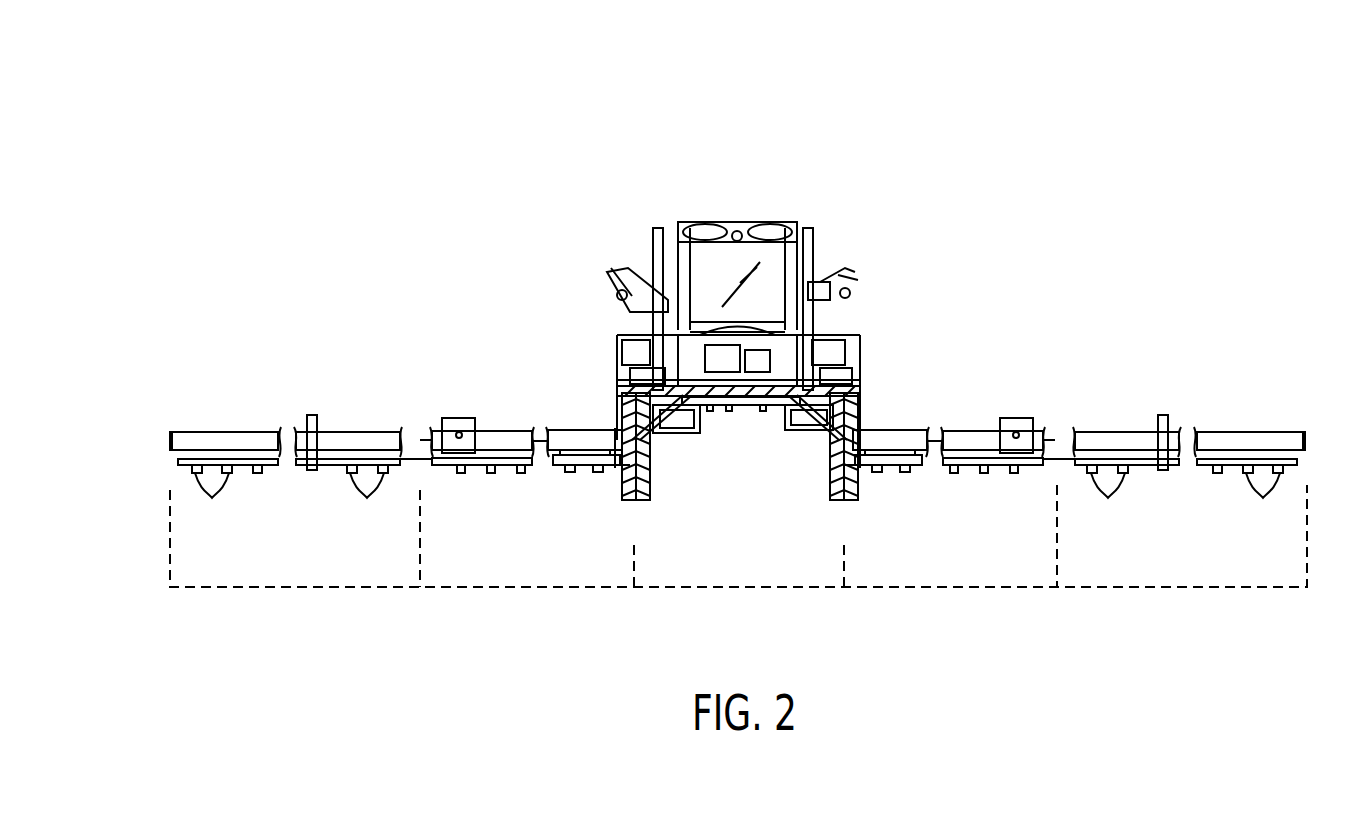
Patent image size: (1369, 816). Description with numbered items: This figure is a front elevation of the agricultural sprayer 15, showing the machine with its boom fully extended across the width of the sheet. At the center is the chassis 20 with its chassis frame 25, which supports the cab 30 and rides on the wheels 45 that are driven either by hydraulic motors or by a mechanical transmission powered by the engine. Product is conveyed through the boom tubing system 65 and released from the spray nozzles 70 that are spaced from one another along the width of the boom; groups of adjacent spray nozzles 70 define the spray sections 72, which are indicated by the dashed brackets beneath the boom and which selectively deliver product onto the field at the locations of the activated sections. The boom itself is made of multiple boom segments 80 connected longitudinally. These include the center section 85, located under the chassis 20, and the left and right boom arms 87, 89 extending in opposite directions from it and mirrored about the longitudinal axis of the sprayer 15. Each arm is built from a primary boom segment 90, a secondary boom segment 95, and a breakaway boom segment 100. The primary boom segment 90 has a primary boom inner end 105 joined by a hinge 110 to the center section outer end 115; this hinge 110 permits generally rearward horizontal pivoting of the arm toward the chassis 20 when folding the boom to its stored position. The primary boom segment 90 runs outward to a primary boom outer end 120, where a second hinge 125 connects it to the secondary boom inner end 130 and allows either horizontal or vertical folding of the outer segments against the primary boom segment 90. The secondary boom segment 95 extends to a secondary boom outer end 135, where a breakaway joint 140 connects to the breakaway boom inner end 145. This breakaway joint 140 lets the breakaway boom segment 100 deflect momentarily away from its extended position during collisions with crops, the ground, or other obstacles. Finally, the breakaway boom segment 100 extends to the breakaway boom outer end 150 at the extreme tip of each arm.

The sprayer 15 is at (712, 84).
The chassis 20 is at (780, 405).
The chassis frame 25 is at (757, 350).
The cab 30 is at (733, 223).
The wheels 45 is at (650, 492).
The boom tubing system 65 is at (922, 472).
The spray nozzles 70 is at (1000, 535).
The spray sections 72 is at (1232, 625).
The boom segments 80 is at (218, 397).
The center section 85 is at (730, 423).
The left boom arm 87 is at (1238, 310).
The right boom arm 89 is at (455, 302).
The primary boom segment 90 is at (573, 385).
The secondary boom segment 95 is at (362, 382).
The breakaway boom segment 100 is at (238, 412).
The primary boom inner end 105 is at (587, 442).
The hinge 110 is at (613, 478).
The center section outer end 115 is at (655, 428).
The primary boom outer end 120 is at (502, 440).
The hinge 125 is at (463, 445).
The secondary boom inner end 130 is at (430, 437).
The secondary boom outer end 135 is at (327, 437).
The breakaway joint 140 is at (310, 478).
The breakaway boom inner end 145 is at (300, 440).
The breakaway boom outer end 150 is at (188, 430).